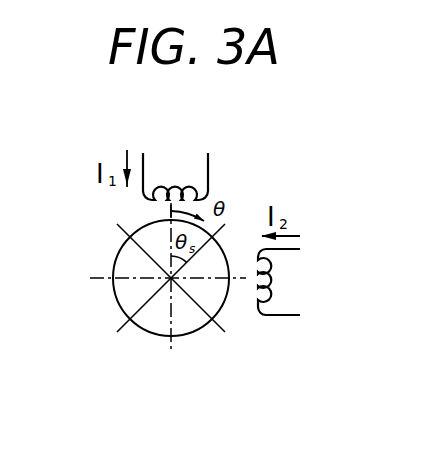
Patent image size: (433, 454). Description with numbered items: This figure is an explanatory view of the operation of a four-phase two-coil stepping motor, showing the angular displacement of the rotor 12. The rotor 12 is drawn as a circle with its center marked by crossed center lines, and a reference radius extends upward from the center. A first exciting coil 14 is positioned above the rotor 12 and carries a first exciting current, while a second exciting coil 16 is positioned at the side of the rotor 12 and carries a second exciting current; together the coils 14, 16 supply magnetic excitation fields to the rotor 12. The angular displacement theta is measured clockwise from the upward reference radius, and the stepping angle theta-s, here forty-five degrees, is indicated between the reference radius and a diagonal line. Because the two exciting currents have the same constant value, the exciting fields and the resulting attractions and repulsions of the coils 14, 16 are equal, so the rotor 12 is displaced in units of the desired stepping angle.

The rotor 12 is at (115, 300).
The first exciting coil 14 is at (208, 182).
The second exciting coil 16 is at (278, 315).